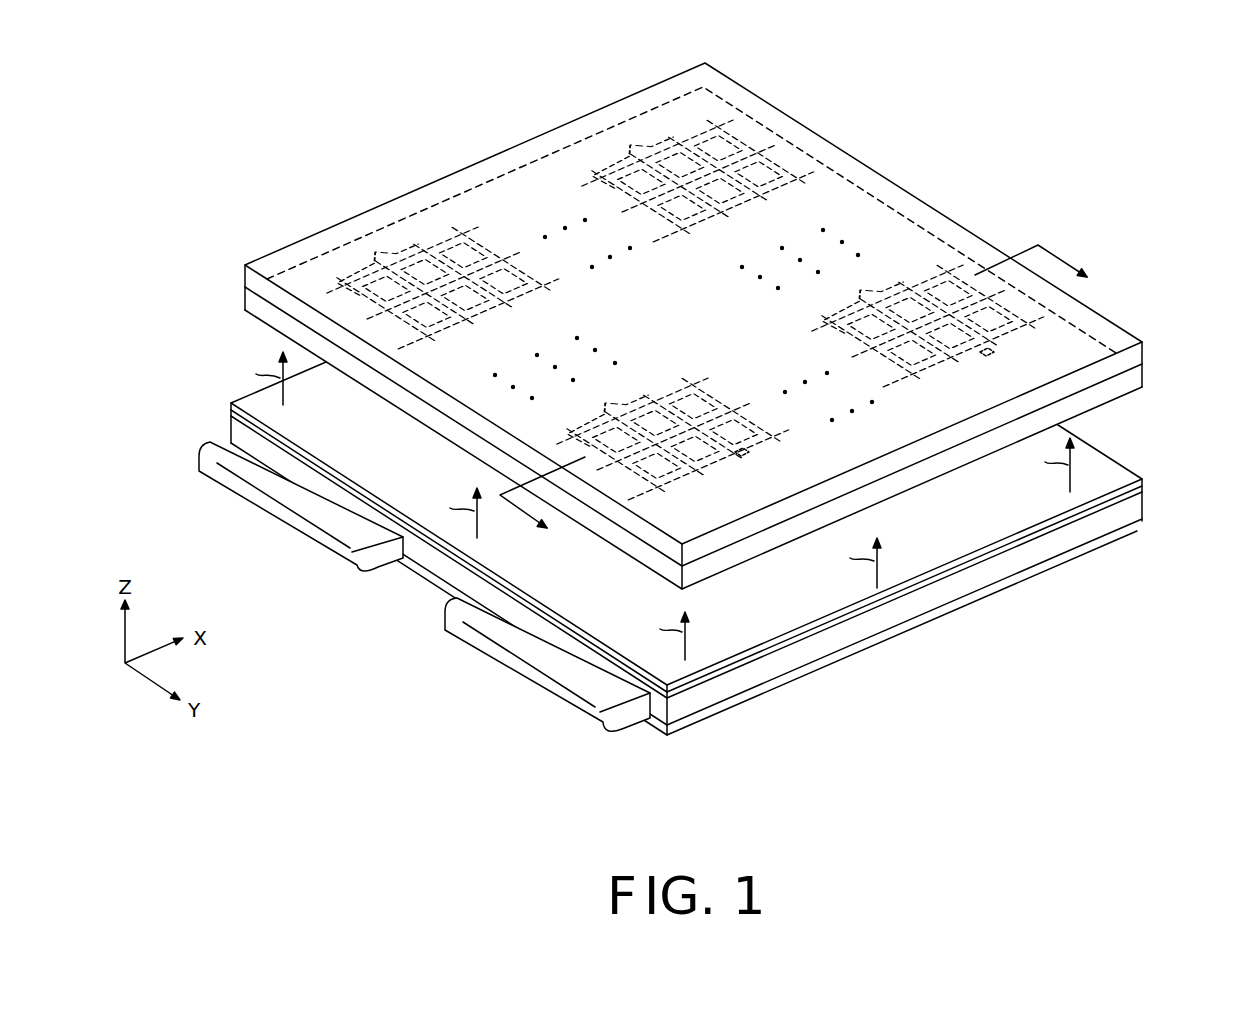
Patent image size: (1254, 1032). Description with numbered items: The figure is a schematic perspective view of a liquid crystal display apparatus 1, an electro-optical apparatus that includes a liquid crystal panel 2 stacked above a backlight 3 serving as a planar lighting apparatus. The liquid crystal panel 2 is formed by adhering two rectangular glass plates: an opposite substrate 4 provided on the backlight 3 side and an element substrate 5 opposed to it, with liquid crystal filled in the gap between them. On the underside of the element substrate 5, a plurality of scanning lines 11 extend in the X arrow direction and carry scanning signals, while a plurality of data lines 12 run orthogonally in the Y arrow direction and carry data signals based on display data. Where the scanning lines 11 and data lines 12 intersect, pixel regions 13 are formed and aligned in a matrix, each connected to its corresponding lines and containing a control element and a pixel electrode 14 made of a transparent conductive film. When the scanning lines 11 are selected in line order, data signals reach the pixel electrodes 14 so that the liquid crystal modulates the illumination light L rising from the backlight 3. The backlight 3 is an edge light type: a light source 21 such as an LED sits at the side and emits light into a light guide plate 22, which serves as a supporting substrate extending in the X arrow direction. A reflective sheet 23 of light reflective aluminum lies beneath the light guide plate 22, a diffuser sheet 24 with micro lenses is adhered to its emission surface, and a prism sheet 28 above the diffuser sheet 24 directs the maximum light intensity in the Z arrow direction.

The liquid crystal display apparatus 1 is at (990, 186).
The liquid crystal panel 2 is at (1190, 335).
The backlight 3 is at (1212, 448).
The opposite substrate 4 is at (1143, 377).
The element substrate 5 is at (1143, 350).
The scanning lines 11 is at (769, 150).
The data lines 12 is at (613, 160).
The pixel regions 13 is at (988, 357).
The pixel electrode 14 is at (710, 128).
The light source 21 is at (292, 536).
The light guide plate 22 is at (1143, 505).
The reflective sheet 23 is at (1143, 522).
The diffuser sheet 24 is at (1143, 490).
The prism sheet 28 is at (1143, 481).